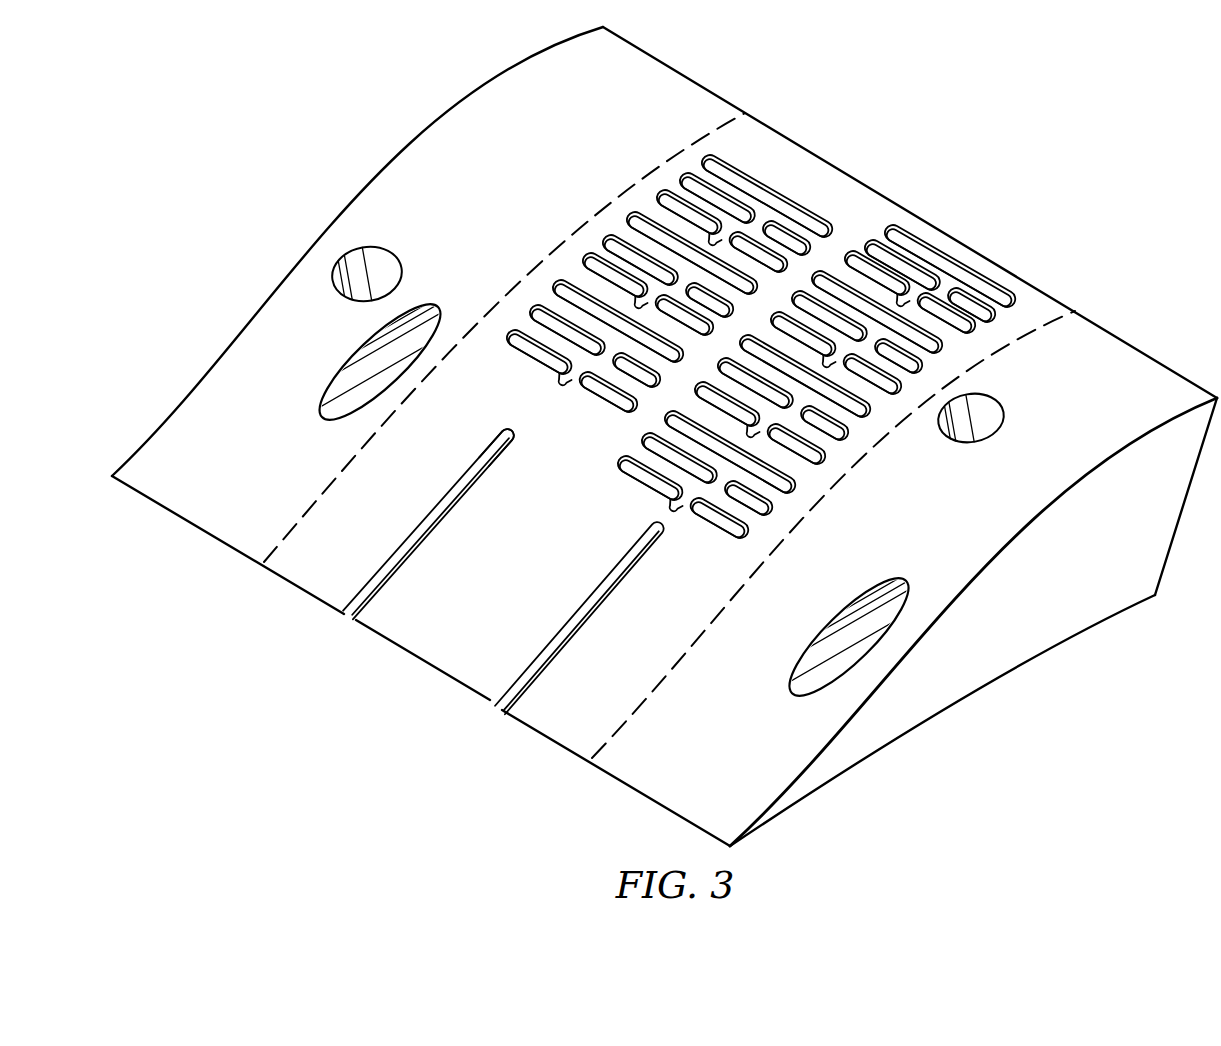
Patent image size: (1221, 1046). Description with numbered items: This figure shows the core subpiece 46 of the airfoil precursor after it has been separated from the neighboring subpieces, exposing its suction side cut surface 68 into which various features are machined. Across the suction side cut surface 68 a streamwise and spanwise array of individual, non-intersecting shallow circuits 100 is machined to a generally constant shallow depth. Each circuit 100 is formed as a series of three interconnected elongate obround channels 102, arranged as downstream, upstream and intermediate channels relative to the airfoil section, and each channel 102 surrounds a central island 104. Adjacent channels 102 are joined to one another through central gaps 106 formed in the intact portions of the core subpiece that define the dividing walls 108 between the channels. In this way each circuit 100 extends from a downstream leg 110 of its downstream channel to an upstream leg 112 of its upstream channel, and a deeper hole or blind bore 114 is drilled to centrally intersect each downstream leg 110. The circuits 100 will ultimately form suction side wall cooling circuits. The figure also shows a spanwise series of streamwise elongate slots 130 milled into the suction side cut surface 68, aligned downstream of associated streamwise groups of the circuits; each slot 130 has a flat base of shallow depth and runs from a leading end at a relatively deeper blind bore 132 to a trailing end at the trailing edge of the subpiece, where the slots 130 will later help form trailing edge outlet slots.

The core subpiece 46 is at (957, 720).
The suction side cut surface 68 is at (971, 517).
The circuits 100 is at (731, 333).
The elongate obround channels 102 is at (520, 340).
The central island 104 is at (517, 327).
The central gaps 106 is at (580, 363).
The dividing walls 108 is at (615, 377).
The downstream leg 110 is at (518, 347).
The upstream leg 112 is at (588, 298).
The blind bore 114 is at (566, 388).
The elongate slots 130 is at (356, 596).
The blind bore 132 is at (510, 437).